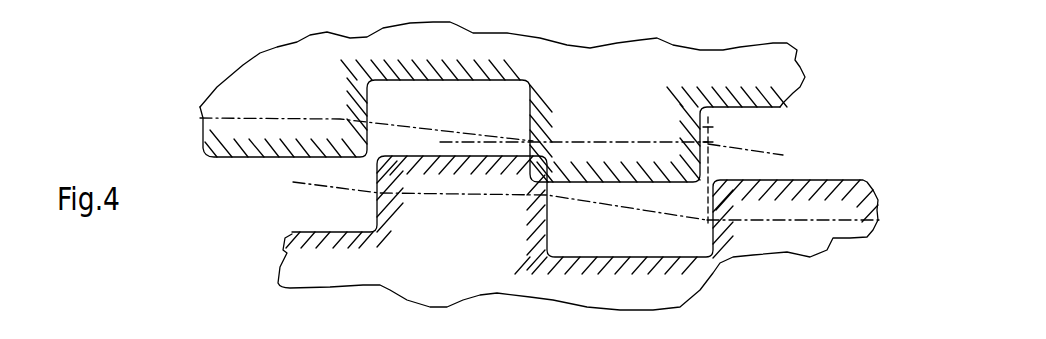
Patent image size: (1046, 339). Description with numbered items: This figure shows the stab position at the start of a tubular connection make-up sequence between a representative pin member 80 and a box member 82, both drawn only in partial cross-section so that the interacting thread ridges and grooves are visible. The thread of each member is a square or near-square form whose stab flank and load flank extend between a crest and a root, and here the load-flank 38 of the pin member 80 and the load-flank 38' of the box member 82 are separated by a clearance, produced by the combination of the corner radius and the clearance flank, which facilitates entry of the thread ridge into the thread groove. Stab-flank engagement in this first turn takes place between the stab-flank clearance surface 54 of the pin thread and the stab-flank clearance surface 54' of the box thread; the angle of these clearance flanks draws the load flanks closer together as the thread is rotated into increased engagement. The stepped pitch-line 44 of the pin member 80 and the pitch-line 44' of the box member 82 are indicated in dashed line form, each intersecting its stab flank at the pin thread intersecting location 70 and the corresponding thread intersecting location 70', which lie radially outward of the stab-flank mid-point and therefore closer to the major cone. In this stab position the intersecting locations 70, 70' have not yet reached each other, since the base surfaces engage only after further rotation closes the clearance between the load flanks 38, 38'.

The box member 82 is at (222, 106).
The pin member 80 is at (292, 272).
The pitch-line 44 is at (500, 221).
The pitch-line 44' is at (491, 128).
The load-flank 38 is at (764, 235).
The load-flank 38' is at (606, 170).
The pin thread intersecting location 70 is at (510, 220).
The thread intersecting location 70' is at (576, 115).
The stab-flank clearance surface 54 is at (511, 203).
The stab-flank clearance surface 54' is at (590, 121).